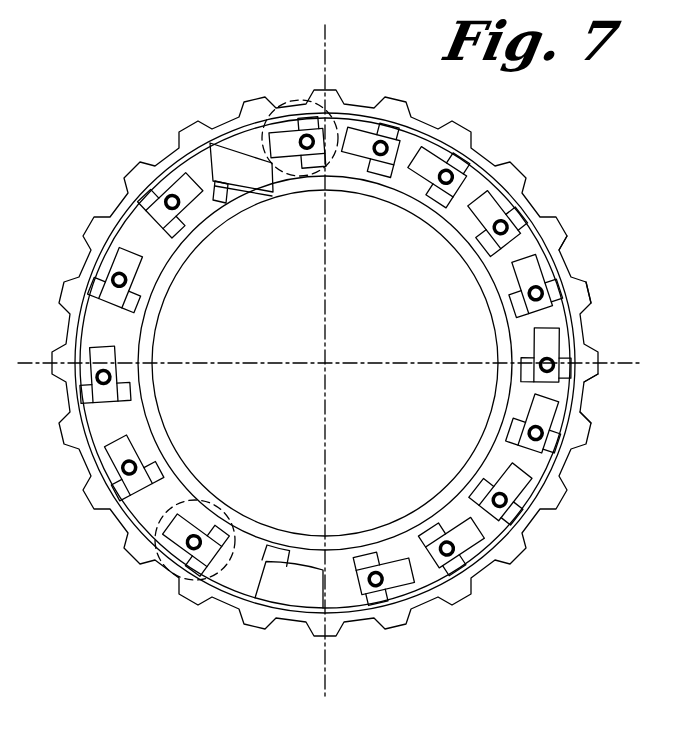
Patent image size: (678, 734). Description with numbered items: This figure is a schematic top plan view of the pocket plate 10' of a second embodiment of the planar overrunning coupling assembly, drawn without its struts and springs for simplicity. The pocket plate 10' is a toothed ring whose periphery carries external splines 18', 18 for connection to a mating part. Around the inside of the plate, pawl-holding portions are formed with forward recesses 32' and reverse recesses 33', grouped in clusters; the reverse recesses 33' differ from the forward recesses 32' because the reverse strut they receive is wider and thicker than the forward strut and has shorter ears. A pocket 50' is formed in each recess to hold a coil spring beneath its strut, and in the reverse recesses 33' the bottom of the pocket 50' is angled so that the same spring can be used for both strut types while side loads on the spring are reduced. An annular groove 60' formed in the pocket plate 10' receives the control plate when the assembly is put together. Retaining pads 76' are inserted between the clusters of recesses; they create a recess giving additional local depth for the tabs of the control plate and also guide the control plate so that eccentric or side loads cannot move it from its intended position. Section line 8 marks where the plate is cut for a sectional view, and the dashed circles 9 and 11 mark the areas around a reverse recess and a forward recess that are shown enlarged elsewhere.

The section line 8- 8 is at (325, 25).
The detail circle 9 is at (167, 577).
The detail circle 11 is at (268, 100).
The pocket plate 10' is at (337, 363).
The external splines 18' is at (617, 266).
The external splines 18 is at (628, 403).
The forward recesses 32' is at (376, 346).
The reverse recesses 33' is at (194, 355).
The pocket 50' is at (292, 361).
The annular groove 60' is at (253, 207).
The retaining pads 76' is at (268, 394).